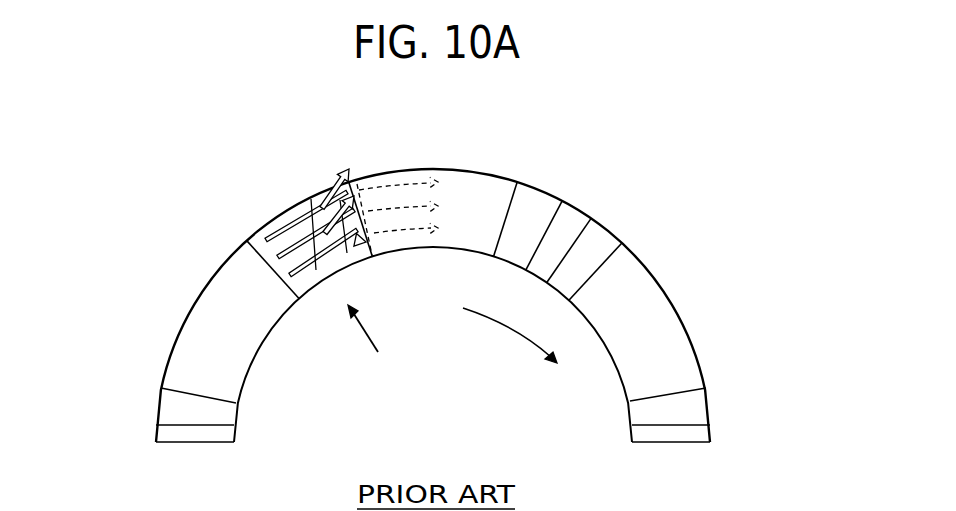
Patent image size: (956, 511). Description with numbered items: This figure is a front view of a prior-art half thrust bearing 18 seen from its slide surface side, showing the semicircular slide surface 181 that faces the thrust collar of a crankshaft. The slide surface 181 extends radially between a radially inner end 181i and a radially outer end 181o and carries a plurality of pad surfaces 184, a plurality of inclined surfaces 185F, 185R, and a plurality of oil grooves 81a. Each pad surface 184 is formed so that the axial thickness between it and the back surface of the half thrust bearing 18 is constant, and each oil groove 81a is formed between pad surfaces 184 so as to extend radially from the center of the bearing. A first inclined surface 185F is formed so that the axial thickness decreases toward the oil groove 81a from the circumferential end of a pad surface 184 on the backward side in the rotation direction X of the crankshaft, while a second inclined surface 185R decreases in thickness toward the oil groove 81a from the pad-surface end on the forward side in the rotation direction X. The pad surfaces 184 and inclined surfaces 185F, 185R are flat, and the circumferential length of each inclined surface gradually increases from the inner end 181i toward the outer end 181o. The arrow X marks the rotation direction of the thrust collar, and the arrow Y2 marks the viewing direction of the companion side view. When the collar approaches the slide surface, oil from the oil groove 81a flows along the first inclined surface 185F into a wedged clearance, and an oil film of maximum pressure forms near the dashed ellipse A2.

The half thrust bearing 18 is at (639, 125).
The slide surface 181 is at (640, 273).
The radially outer end 181o is at (223, 267).
The radially inner end 181i is at (257, 347).
The pad surface 184 is at (441, 172).
The second inclined surface 185R is at (549, 195).
The first inclined surface 185F is at (607, 243).
The oil groove 81a is at (563, 223).
The dashed ellipse A2 is at (343, 172).
The arrow Y2 is at (372, 343).
The rotation direction X is at (510, 335).